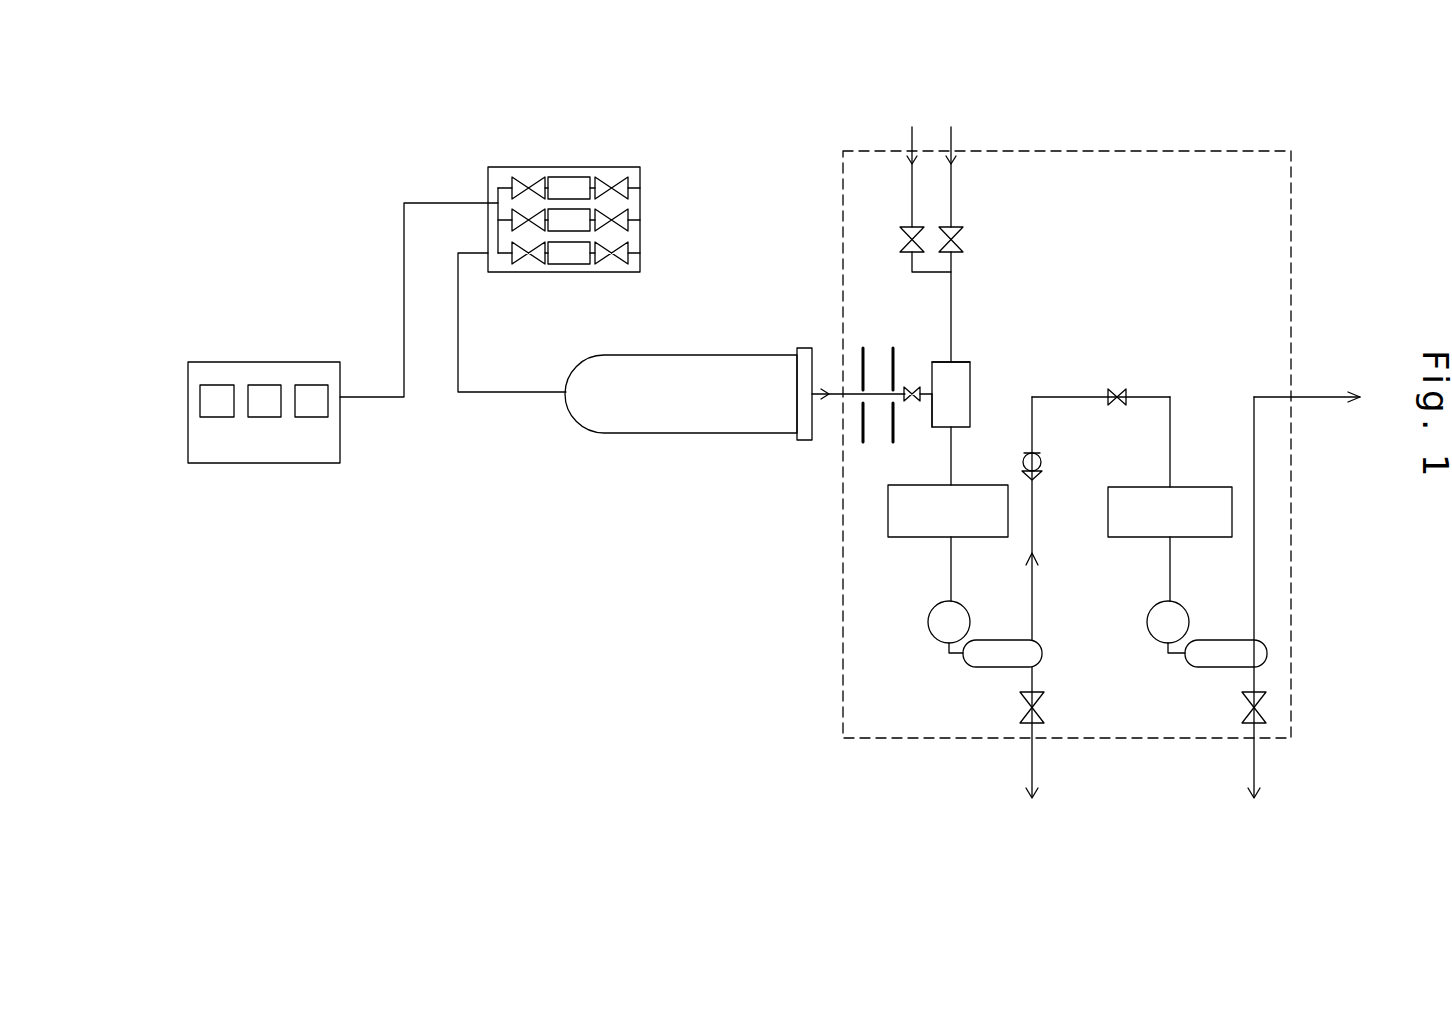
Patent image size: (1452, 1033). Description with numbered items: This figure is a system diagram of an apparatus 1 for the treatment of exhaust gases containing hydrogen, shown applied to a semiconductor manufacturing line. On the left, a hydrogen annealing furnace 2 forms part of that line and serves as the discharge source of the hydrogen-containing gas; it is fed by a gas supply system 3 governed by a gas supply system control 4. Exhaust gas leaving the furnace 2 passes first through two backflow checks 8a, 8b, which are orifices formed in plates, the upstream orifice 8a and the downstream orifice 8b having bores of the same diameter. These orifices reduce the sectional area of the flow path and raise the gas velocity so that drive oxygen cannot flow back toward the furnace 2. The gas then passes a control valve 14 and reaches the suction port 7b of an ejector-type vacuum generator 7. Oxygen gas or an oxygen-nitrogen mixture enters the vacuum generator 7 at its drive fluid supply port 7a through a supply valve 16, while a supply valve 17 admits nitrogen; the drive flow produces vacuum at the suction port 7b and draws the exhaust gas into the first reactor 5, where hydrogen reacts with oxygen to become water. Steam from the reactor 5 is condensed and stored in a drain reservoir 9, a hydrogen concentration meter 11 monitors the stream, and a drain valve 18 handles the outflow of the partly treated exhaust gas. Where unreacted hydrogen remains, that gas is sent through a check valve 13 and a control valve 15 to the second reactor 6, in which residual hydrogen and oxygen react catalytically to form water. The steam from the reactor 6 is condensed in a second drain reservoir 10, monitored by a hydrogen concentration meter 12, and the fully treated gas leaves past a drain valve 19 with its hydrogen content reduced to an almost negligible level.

The apparatus for the treatment of exhaust gases containing hydrogen 1 is at (1046, 120).
The hydrogen annealing furnace 2 is at (680, 433).
The gas supply system 3 is at (640, 232).
The gas supply system control 4 is at (282, 362).
The reactor 5 is at (916, 537).
The reactor 6 is at (1129, 537).
The vacuum generator 7 is at (970, 385).
The drive fluid supply port 7a is at (951, 362).
The suction port 7b is at (929, 400).
The backflow check 8a is at (861, 428).
The backflow check 8b is at (892, 430).
The drain reservoir 9 is at (992, 667).
The drain reservoir 10 is at (1195, 667).
The hydrogen concentration meter 11 is at (931, 637).
The hydrogen concentration meter 12 is at (1149, 637).
The check valve 13 is at (1041, 460).
The control valve 14 is at (912, 388).
The control valve 15 is at (1117, 389).
The supply valve 16 is at (963, 243).
The supply valve 17 is at (903, 243).
The drain valve 18 is at (1044, 710).
The drain valve 19 is at (1266, 710).